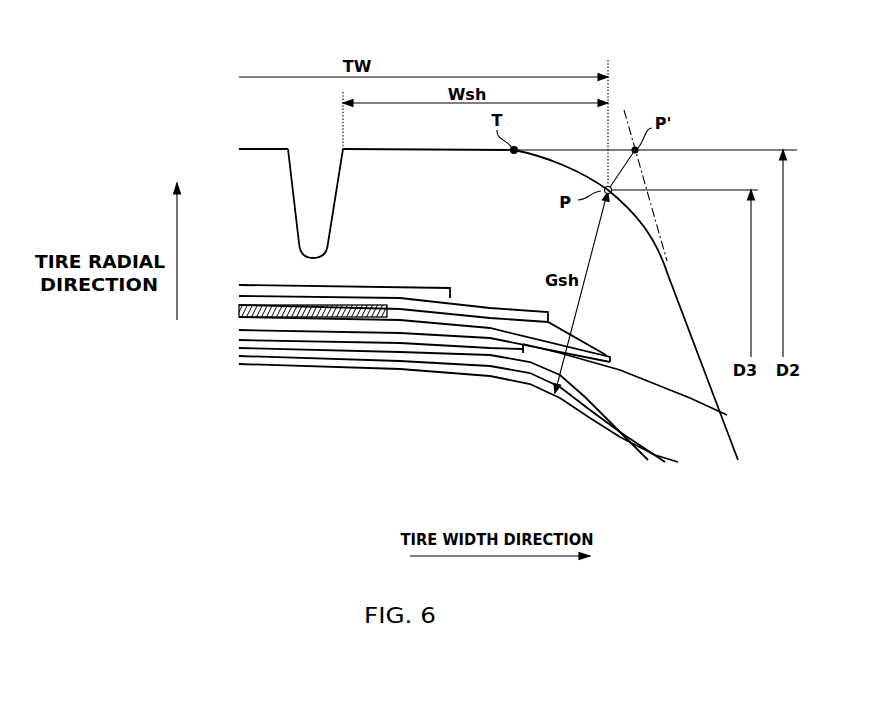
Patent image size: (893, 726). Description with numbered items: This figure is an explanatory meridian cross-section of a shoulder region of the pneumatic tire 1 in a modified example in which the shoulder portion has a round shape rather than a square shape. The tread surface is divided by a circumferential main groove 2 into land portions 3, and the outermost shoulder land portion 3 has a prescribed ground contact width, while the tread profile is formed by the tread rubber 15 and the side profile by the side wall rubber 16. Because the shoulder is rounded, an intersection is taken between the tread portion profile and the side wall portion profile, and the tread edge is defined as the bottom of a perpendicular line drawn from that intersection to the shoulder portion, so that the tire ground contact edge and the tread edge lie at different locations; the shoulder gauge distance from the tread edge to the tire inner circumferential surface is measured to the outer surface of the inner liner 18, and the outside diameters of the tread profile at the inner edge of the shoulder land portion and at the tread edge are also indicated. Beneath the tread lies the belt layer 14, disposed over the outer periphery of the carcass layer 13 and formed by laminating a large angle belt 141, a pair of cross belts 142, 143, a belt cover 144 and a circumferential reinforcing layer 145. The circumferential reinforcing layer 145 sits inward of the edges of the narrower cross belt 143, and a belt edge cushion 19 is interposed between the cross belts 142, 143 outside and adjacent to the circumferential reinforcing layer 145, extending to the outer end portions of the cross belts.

The pneumatic tire 1 is at (655, 83).
The circumferential main groove 2 is at (314, 166).
The land portion 3 is at (268, 148).
The carcass layer 13 is at (623, 417).
The belt layer 14 is at (401, 381).
The tread rubber 15 is at (653, 266).
The side wall rubber 16 is at (712, 418).
The inner liner 18 is at (590, 412).
The belt edge cushion 19 is at (462, 321).
The large angle belt 141 is at (424, 384).
The cross belt 142 is at (353, 325).
The cross belt 143 is at (307, 302).
The belt cover 144 is at (268, 292).
The circumferential reinforcing layer 145 is at (242, 341).